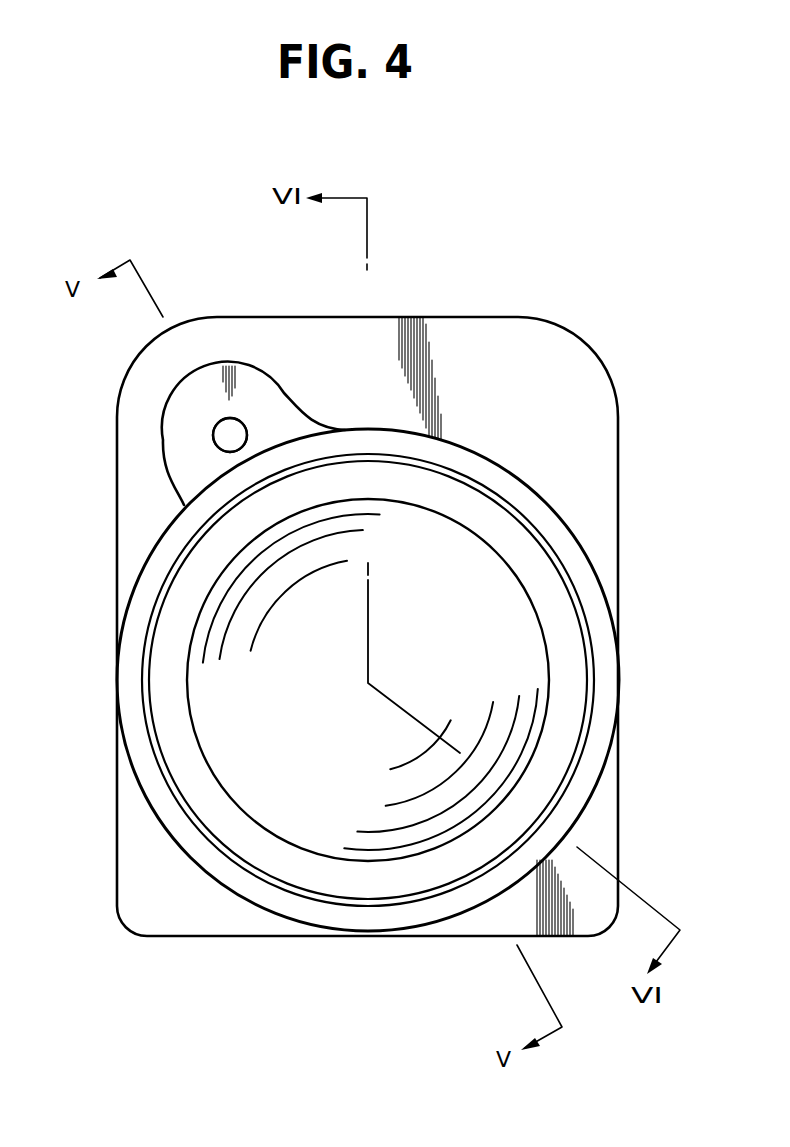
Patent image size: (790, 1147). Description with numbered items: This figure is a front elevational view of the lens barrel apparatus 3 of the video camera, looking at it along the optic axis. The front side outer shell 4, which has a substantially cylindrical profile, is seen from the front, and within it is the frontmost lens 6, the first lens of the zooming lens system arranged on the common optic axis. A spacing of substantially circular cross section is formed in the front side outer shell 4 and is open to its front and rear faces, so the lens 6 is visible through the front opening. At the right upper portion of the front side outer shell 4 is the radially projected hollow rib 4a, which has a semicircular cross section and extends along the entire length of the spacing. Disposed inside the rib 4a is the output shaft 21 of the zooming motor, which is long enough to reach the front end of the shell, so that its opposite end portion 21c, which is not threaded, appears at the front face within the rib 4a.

The lens barrel apparatus 3 is at (628, 338).
The front side outer shell 4 is at (575, 552).
The hollow rib 4a is at (208, 376).
The lens 6 is at (513, 648).
The output shaft 21 is at (221, 431).
The end portion 21c is at (225, 442).